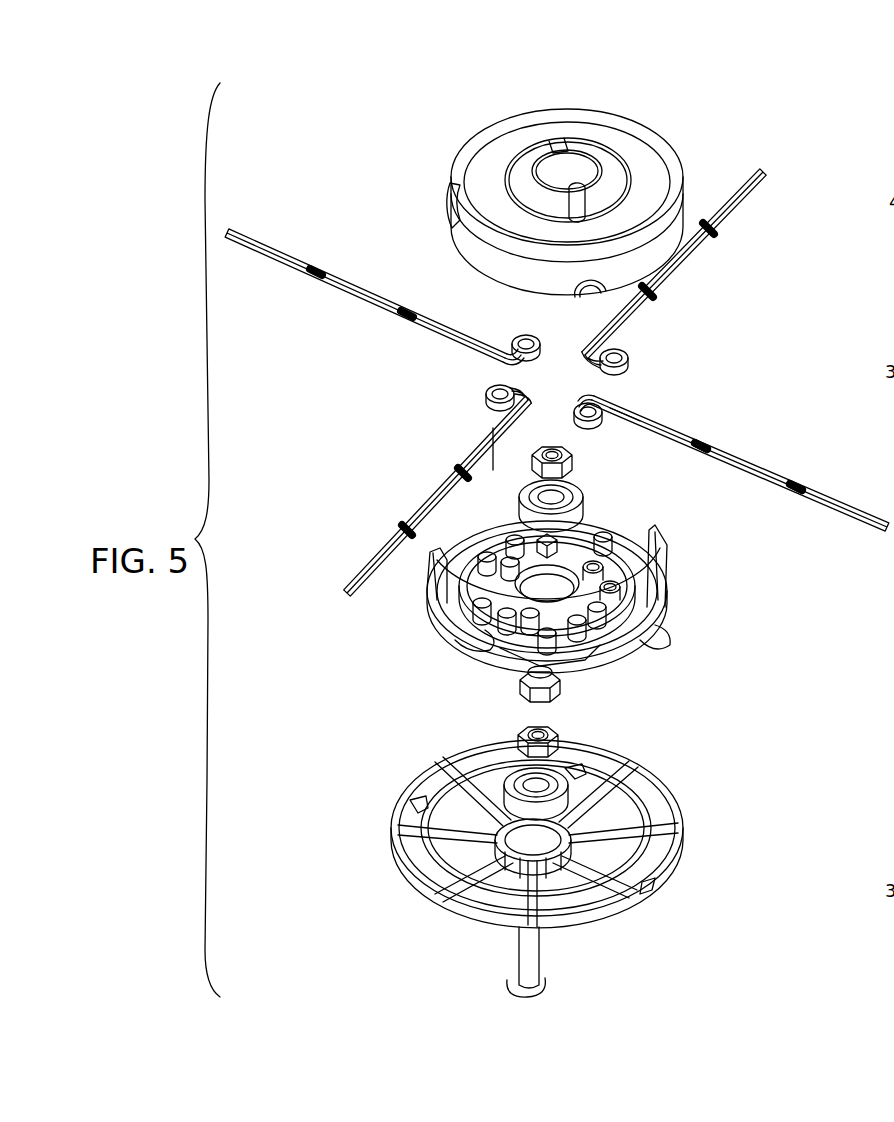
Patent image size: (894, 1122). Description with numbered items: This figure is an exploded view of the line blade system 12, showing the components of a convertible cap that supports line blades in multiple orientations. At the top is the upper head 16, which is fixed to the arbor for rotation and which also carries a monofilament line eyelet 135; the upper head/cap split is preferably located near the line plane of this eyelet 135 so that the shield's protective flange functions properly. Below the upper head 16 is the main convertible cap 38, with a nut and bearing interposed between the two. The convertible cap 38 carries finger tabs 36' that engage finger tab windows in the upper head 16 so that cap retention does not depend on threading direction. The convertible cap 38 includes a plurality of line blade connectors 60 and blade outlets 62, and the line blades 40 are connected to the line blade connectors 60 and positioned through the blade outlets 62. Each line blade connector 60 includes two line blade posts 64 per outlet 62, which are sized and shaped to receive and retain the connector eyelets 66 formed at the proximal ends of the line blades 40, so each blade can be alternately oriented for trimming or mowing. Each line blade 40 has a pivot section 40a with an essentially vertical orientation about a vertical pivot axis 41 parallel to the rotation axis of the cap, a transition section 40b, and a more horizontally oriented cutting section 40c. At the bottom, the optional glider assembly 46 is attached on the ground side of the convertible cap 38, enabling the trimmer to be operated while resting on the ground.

The upper head 16 is at (638, 153).
The eyelet 135 is at (593, 294).
The line blade 40 is at (680, 423).
The pivot section 40a is at (633, 410).
The transition section 40b is at (705, 440).
The cutting section 40c is at (836, 473).
The vertical pivot axis 41 is at (462, 441).
The connector eyelet 66 is at (510, 337).
The line blade system 12 is at (422, 611).
The finger tab 36' is at (585, 556).
The line blade connector 60 is at (500, 537).
The line blade post 64 is at (620, 590).
The blade outlet 62 is at (470, 653).
The main convertible cap 38 is at (670, 612).
The glider assembly 46 is at (383, 826).